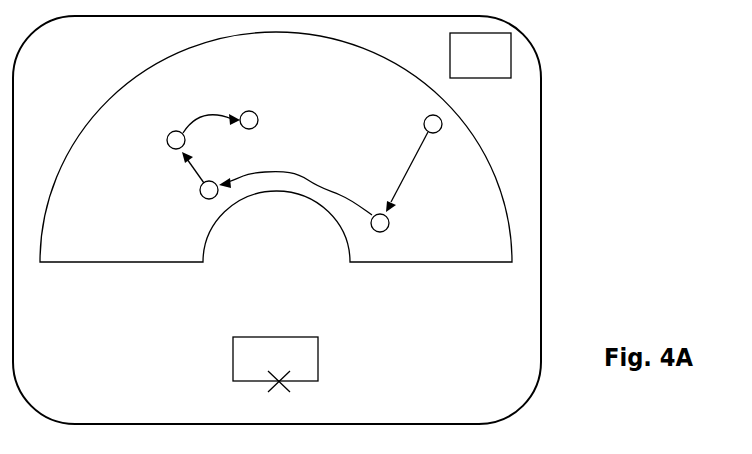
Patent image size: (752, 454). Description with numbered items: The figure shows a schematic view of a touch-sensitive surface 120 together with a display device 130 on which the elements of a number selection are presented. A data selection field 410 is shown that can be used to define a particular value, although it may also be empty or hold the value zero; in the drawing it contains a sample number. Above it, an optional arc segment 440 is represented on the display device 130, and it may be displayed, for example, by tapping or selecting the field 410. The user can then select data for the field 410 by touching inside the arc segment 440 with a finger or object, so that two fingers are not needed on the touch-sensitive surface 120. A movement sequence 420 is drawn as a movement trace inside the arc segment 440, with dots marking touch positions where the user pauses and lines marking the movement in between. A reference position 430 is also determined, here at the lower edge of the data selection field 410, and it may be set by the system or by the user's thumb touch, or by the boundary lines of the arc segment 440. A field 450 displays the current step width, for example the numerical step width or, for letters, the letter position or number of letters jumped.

The touch-sensitive surface 120 is at (360, 220).
The display device 130 is at (552, 137).
The data selection field 410 is at (327, 347).
The movement sequence 420 is at (304, 171).
The reference position 430 is at (265, 386).
The arc segment 440 is at (132, 268).
The field for displaying the current step width 450 is at (517, 58).